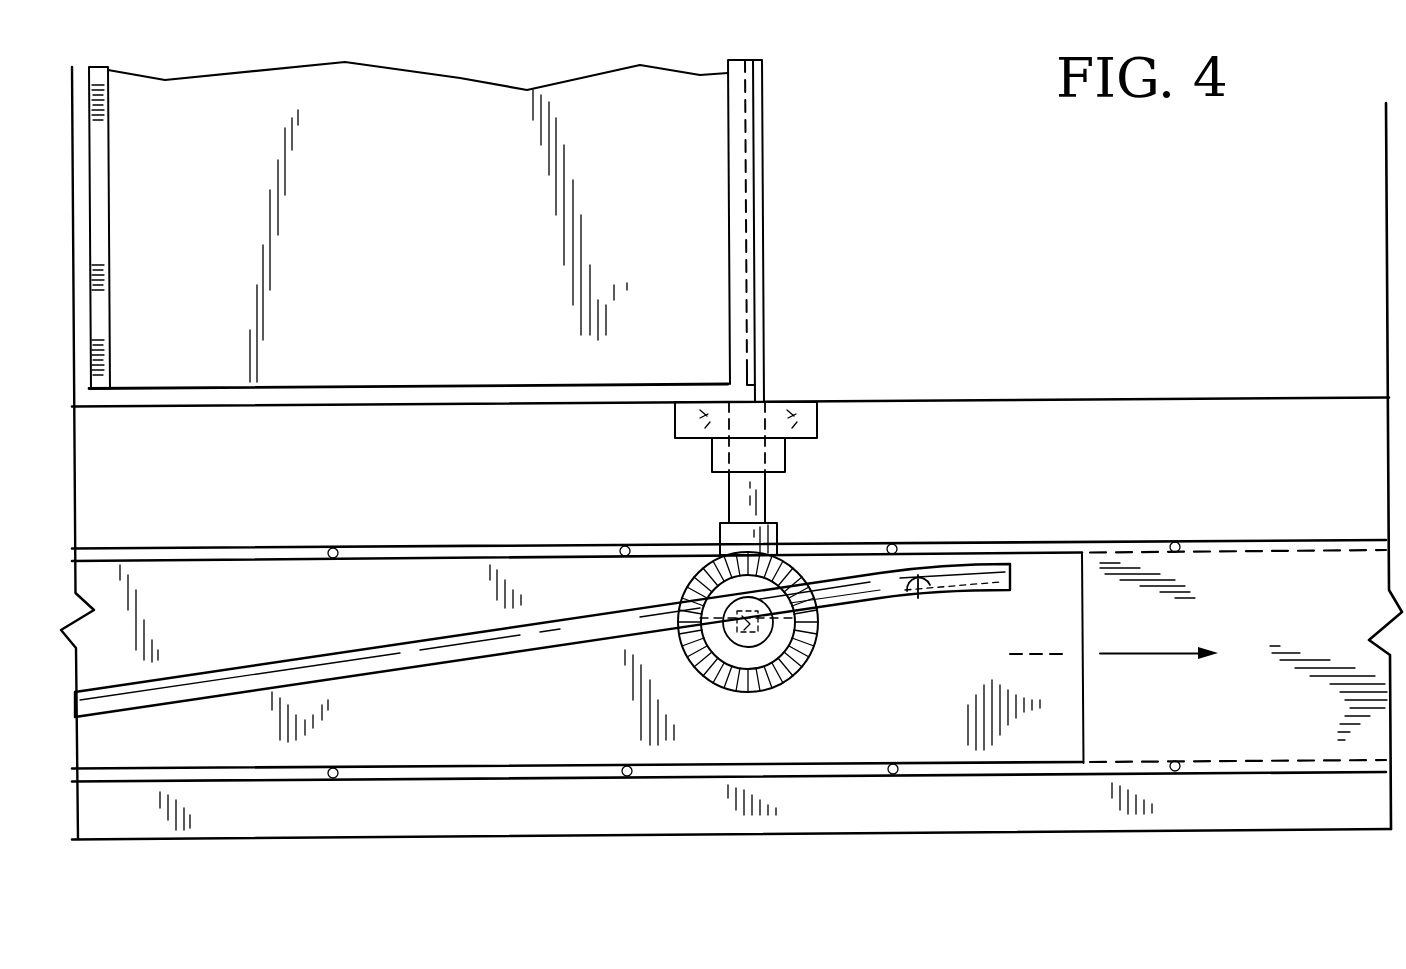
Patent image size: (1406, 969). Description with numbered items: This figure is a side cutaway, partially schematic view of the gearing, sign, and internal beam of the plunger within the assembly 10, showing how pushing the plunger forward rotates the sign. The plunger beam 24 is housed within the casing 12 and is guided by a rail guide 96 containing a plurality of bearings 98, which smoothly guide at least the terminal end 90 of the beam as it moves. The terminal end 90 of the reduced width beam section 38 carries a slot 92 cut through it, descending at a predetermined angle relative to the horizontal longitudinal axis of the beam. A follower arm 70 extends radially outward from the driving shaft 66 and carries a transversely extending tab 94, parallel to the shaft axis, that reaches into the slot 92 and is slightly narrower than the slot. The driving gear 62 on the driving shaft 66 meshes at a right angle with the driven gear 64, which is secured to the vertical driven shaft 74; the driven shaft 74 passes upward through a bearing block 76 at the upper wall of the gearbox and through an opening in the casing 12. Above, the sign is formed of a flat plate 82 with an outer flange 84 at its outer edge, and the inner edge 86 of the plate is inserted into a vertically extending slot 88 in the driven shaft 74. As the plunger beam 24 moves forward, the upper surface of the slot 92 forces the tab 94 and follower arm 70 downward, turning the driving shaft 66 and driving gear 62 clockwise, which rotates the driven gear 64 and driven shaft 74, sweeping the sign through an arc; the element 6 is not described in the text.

The hopper housing 6 is at (72, 262).
The assembly 10 is at (1030, 844).
The casing 12 is at (715, 828).
The plunger beam 24 is at (218, 617).
The reduced width beam section 38 is at (435, 735).
The driving gear 62 is at (793, 684).
The driven gear 64 is at (745, 536).
The driving shaft 66 is at (727, 650).
The follower arm 70 is at (833, 610).
The driven shaft 74 is at (766, 290).
The bearing block 76 is at (818, 430).
The flat plate 82 is at (421, 247).
The outer flange 84 is at (97, 250).
The inner edge 86 is at (738, 215).
The vertically extending slot 88 is at (748, 377).
The terminal end 90 is at (565, 720).
The slot 92 is at (495, 648).
The tab 94 is at (920, 580).
The rail guide 96 is at (373, 547).
The bearings 98 is at (333, 548).